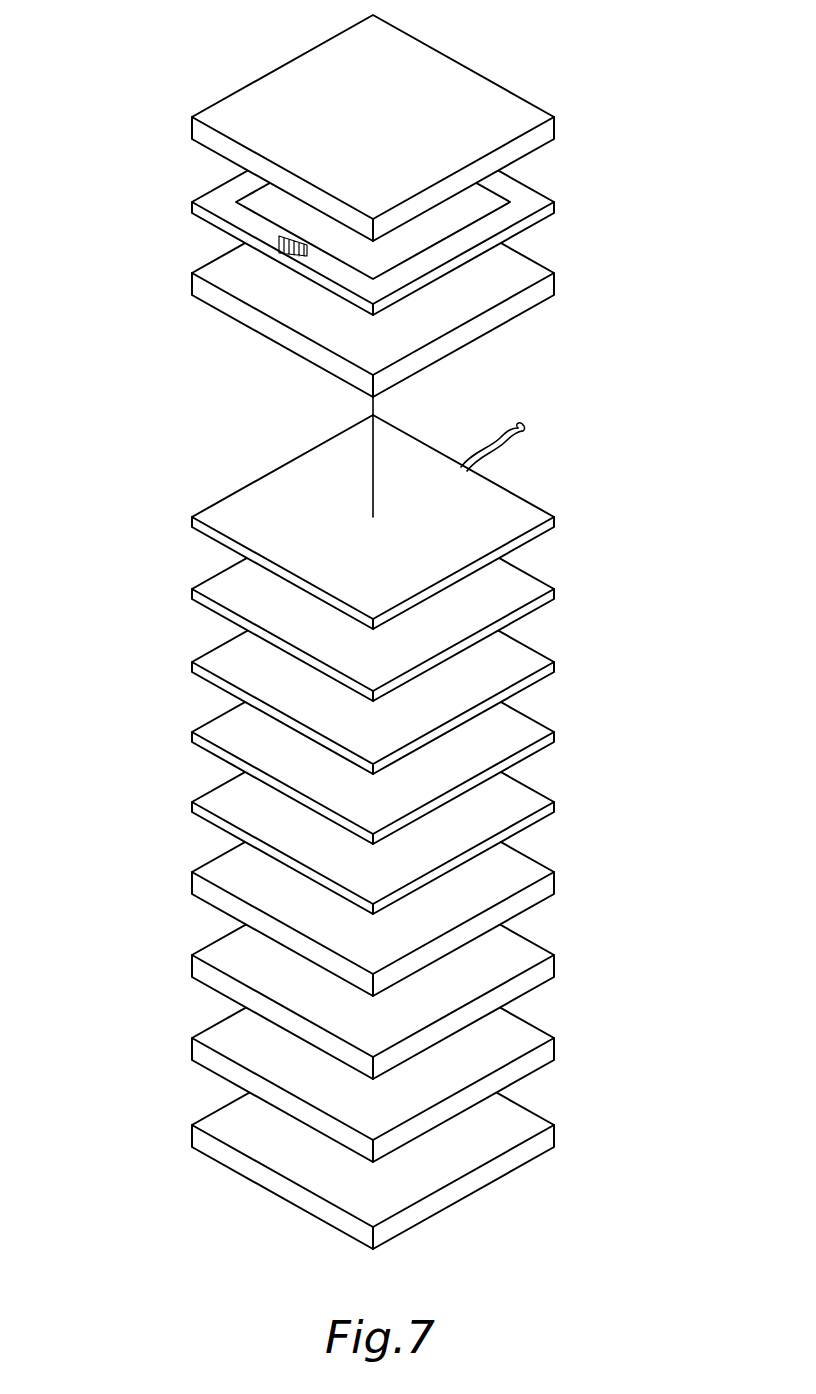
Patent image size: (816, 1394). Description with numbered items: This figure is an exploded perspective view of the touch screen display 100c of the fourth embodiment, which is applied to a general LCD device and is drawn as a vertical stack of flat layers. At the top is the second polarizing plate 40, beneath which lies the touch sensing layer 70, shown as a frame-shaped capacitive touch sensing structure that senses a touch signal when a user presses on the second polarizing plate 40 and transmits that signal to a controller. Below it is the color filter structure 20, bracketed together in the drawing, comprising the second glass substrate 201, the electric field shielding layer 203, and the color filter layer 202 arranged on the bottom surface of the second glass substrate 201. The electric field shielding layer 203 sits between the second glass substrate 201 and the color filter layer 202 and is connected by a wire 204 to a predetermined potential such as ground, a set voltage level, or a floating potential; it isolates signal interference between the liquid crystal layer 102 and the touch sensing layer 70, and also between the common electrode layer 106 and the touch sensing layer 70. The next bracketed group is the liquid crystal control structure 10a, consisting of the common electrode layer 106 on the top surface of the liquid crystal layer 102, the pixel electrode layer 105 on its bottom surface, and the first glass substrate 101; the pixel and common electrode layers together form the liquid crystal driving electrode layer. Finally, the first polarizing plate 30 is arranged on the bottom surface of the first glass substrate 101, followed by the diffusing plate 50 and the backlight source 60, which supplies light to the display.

The second polarizing plate 40 is at (554, 128).
The touch sensing layer 70 is at (554, 207).
The second glass substrate 201 is at (554, 284).
The electric field shielding layer 203 is at (554, 522).
The wire 204 is at (484, 442).
The color filter layer 202 is at (554, 594).
The color filter structure 20 is at (666, 285).
The common electrode layer 106 is at (554, 667).
The liquid crystal layer 102 is at (554, 737).
The pixel electrode layer 105 is at (554, 807).
The first glass substrate 101 is at (554, 883).
The liquid crystal control structure 10a is at (667, 661).
The first polarizing plate 30 is at (554, 966).
The diffusing plate 50 is at (554, 1049).
The backlight source 60 is at (554, 1136).
The touch screen display 100c is at (114, 1223).